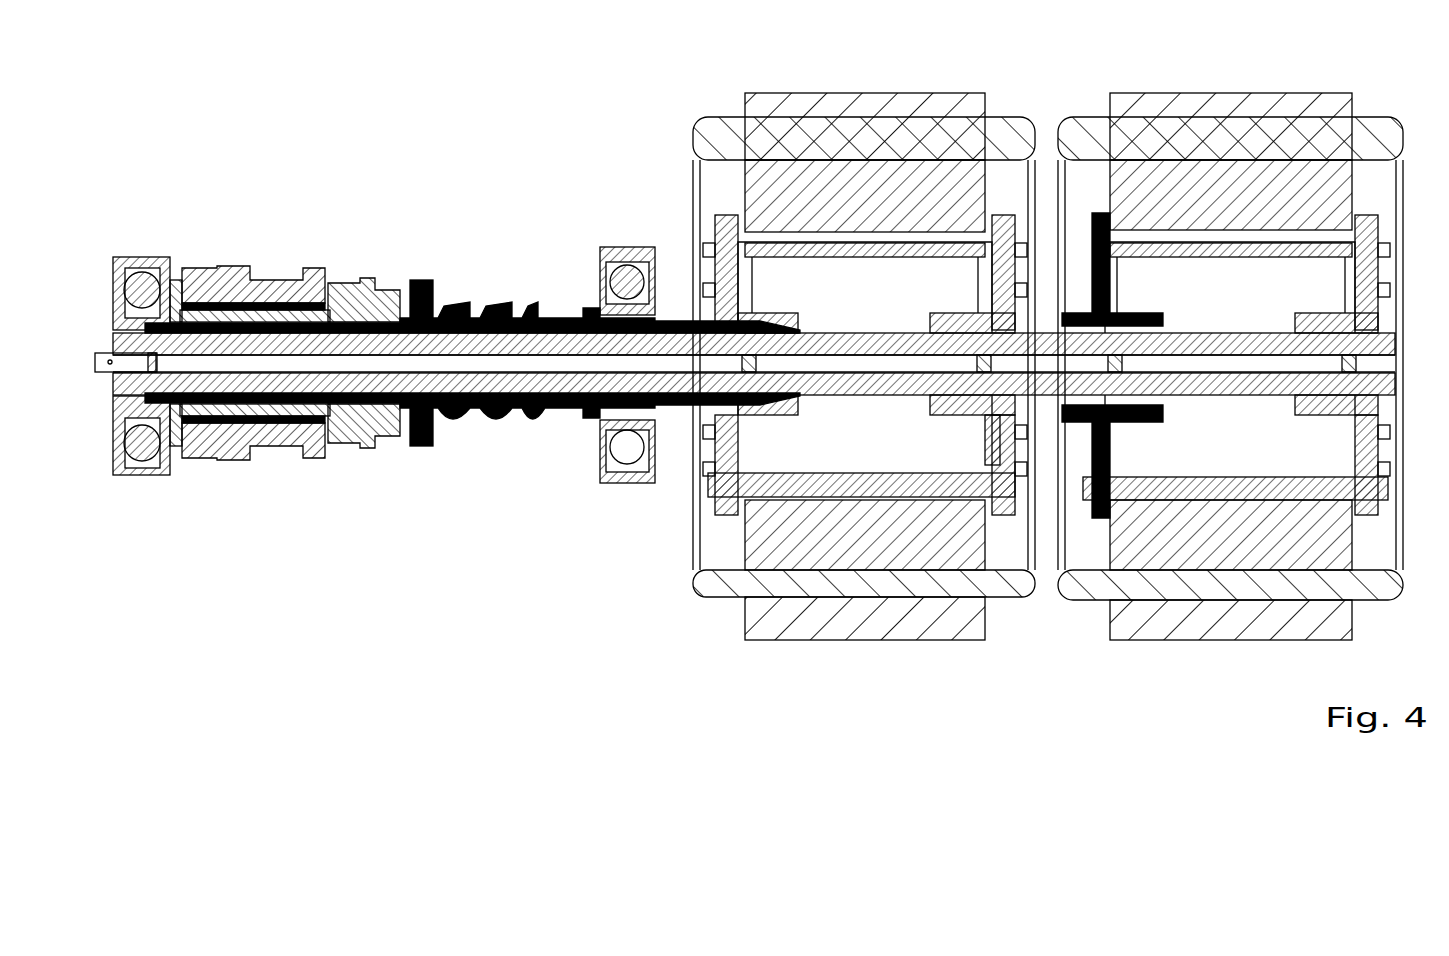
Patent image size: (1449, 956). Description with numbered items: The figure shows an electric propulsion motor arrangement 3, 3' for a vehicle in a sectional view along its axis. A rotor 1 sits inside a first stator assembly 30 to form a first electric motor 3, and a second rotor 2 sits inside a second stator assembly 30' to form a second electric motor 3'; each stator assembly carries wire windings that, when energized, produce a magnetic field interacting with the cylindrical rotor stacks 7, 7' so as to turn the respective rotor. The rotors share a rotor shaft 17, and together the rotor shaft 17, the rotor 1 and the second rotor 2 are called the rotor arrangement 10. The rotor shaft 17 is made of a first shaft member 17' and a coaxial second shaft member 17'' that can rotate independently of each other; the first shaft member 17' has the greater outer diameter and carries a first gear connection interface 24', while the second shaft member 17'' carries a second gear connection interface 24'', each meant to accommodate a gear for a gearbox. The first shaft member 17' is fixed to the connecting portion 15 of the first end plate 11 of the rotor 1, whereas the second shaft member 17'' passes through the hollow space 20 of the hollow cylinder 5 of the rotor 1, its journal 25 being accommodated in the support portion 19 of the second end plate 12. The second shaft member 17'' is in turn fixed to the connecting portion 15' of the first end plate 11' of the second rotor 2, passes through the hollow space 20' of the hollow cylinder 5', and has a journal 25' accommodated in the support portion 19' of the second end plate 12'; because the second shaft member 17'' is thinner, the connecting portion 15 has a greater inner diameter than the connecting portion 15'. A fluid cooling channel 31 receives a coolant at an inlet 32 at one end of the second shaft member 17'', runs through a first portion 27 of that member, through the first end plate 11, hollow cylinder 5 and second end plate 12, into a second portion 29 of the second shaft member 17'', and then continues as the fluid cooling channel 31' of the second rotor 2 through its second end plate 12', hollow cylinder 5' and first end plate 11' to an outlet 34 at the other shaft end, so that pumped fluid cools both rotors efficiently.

The rotor arrangement 10 is at (620, 46).
The first electric motor 3 is at (864, 300).
The second electric motor 3' is at (1230, 302).
The first stator assembly 30 is at (857, 311).
The second stator assembly 30' is at (1230, 311).
The second portion of the second shaft member 29 is at (1046, 345).
The rotor 1 is at (716, 210).
The second rotor 2 is at (1378, 205).
The rotor shaft 17 is at (273, 317).
The fluid cooling channel 31 is at (666, 304).
The first portion of the second shaft member 27 is at (560, 356).
The first end plate 11 is at (752, 365).
The second end plate 12 is at (975, 365).
The second end plate of the second rotor 12' is at (1118, 365).
The hollow space of the hollow cylinder of the second rotor 20' is at (1207, 314).
The hollow space of the hollow cylinder 20 is at (870, 452).
The fluid cooling channel of the second rotor 31' is at (1254, 271).
The first end plate of the second rotor 11' is at (1342, 365).
The connecting portion 15 is at (791, 371).
The journal 25 is at (948, 371).
The support portion 19 is at (962, 433).
The hollow cylinder 5 is at (861, 464).
The journal of the second shaft member 25' is at (1183, 412).
The support portion of the second end plate of the second rotor 19' is at (1165, 440).
The hollow cylinder of the second rotor 5' is at (1235, 466).
The connecting portion of the first end plate of the second rotor 15' is at (1320, 387).
The first gear connection interface 24' is at (472, 391).
The second shaft member 17'' is at (558, 449).
The first shaft member 17' is at (627, 389).
The second gear connection interface 24'' is at (255, 486).
The inlet 32 is at (95, 372).
The cylindrical rotor stack 7 is at (827, 376).
The cylindrical rotor stack of the second rotor 7' is at (1198, 377).
The outlet 34 is at (1393, 356).